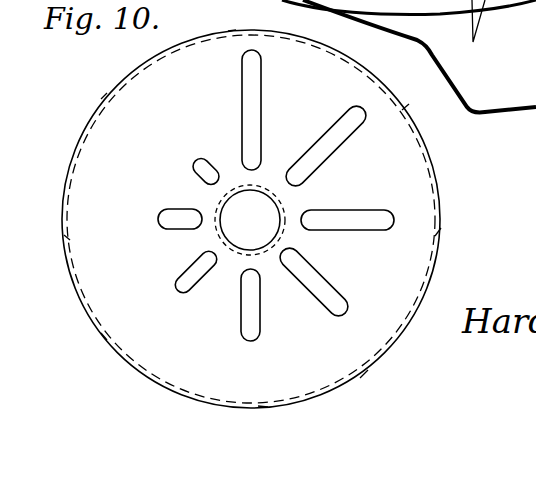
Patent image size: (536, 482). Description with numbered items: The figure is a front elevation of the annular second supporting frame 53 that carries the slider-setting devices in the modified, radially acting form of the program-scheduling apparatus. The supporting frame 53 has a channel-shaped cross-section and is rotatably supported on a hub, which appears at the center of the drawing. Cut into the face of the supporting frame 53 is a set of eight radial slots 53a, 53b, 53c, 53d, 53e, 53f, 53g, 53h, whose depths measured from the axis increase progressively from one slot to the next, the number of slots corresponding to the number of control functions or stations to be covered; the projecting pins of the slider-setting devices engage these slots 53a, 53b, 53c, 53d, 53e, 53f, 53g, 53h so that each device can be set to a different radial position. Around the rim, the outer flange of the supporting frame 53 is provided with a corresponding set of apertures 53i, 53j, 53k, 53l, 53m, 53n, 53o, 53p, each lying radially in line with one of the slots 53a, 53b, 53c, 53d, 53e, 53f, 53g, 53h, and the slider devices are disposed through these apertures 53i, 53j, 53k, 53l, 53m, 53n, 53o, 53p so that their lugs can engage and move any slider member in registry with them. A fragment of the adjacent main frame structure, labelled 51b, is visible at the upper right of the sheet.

The second supporting frame 53 is at (424, 166).
The radial slot 53a is at (196, 165).
The radial slot 53b is at (158, 215).
The radial slot 53c is at (178, 283).
The radial slot 53d is at (241, 319).
The radial slot 53e is at (340, 293).
The radial slot 53f is at (378, 193).
The radial slot 53g is at (337, 121).
The radial slot 53h is at (242, 83).
The aperture 53i is at (104, 96).
The aperture 53j is at (65, 240).
The aperture 53k is at (104, 338).
The aperture 53l is at (266, 403).
The aperture 53m is at (366, 371).
The aperture 53n is at (438, 232).
The aperture 53o is at (404, 106).
The aperture 53p is at (231, 33).
The pointer 51b is at (493, 23).